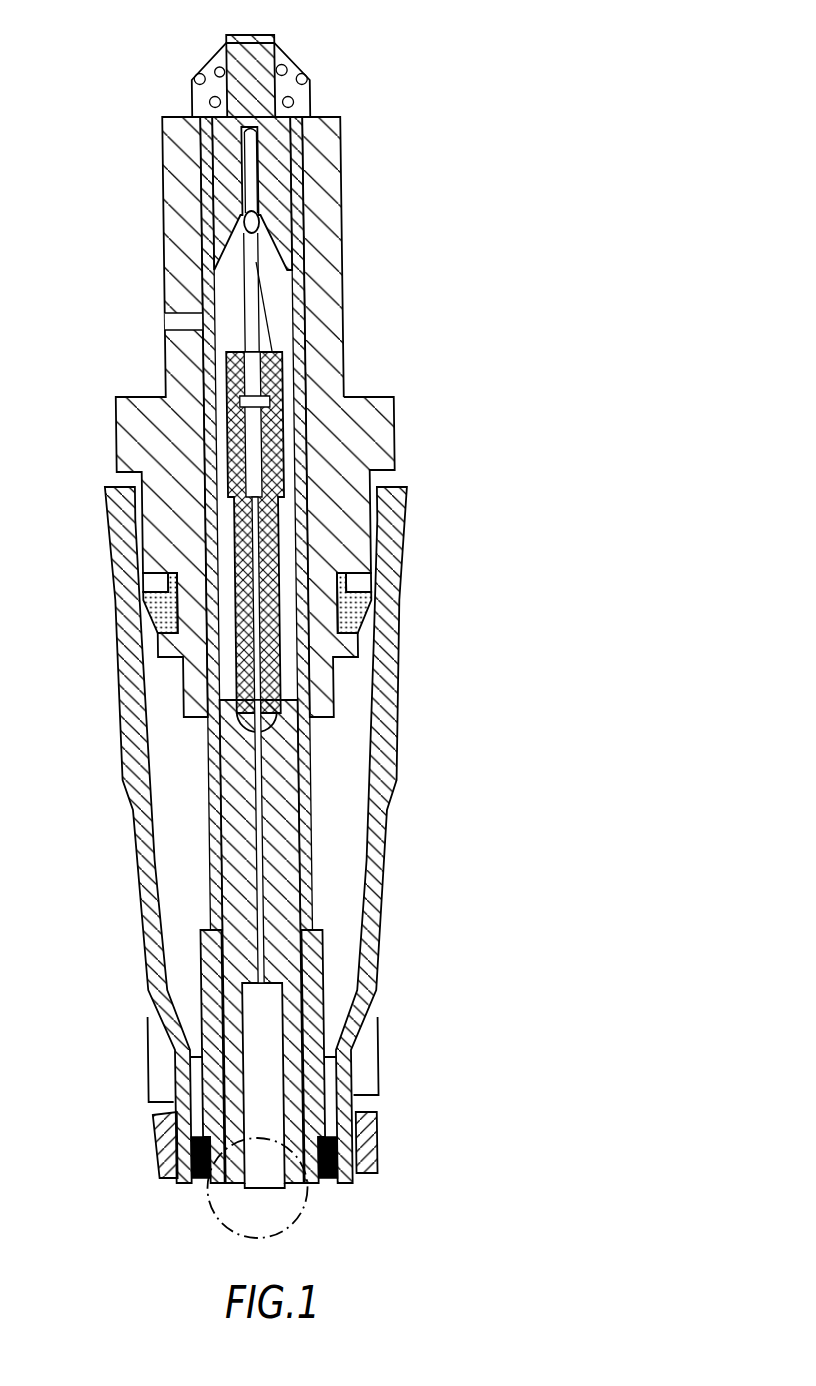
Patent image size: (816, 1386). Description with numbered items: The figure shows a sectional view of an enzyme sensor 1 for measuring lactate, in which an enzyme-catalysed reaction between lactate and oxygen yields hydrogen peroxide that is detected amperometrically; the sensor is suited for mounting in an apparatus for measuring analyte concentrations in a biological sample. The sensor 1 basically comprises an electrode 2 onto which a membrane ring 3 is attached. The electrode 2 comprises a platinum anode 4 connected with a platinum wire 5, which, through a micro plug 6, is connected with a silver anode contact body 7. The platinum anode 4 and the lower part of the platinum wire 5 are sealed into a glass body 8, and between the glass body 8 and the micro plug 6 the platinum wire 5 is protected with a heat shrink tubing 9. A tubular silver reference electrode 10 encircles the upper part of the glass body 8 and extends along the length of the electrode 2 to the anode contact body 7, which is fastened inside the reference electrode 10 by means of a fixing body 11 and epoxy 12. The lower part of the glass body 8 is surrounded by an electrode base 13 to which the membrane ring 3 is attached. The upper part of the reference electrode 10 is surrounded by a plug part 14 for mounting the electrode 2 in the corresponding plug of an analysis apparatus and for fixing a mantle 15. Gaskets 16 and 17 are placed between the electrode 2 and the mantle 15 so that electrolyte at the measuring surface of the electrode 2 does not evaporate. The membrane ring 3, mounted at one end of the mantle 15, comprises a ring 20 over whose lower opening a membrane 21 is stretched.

The enzyme sensor 1 is at (417, 142).
The electrode 2 is at (108, 400).
The membrane ring 3 is at (152, 1140).
The platinum anode 4 is at (193, 1183).
The platinum wire 5 is at (258, 700).
The micro plug 6 is at (260, 222).
The silver anode contact body 7 is at (258, 50).
The glass body 8 is at (290, 950).
The valve seat insert 9 is at (275, 455).
The tubular silver reference electrode 10 is at (208, 820).
The fixing body 11 is at (307, 260).
The epoxy 12 is at (207, 77).
The electrode base 13 is at (310, 1065).
The plug part 14 is at (115, 463).
The mantle 15 is at (378, 598).
The gasket 16 is at (142, 595).
The gasket 17 is at (372, 1135).
The ring 20 is at (372, 1163).
The membrane 21 is at (307, 1187).